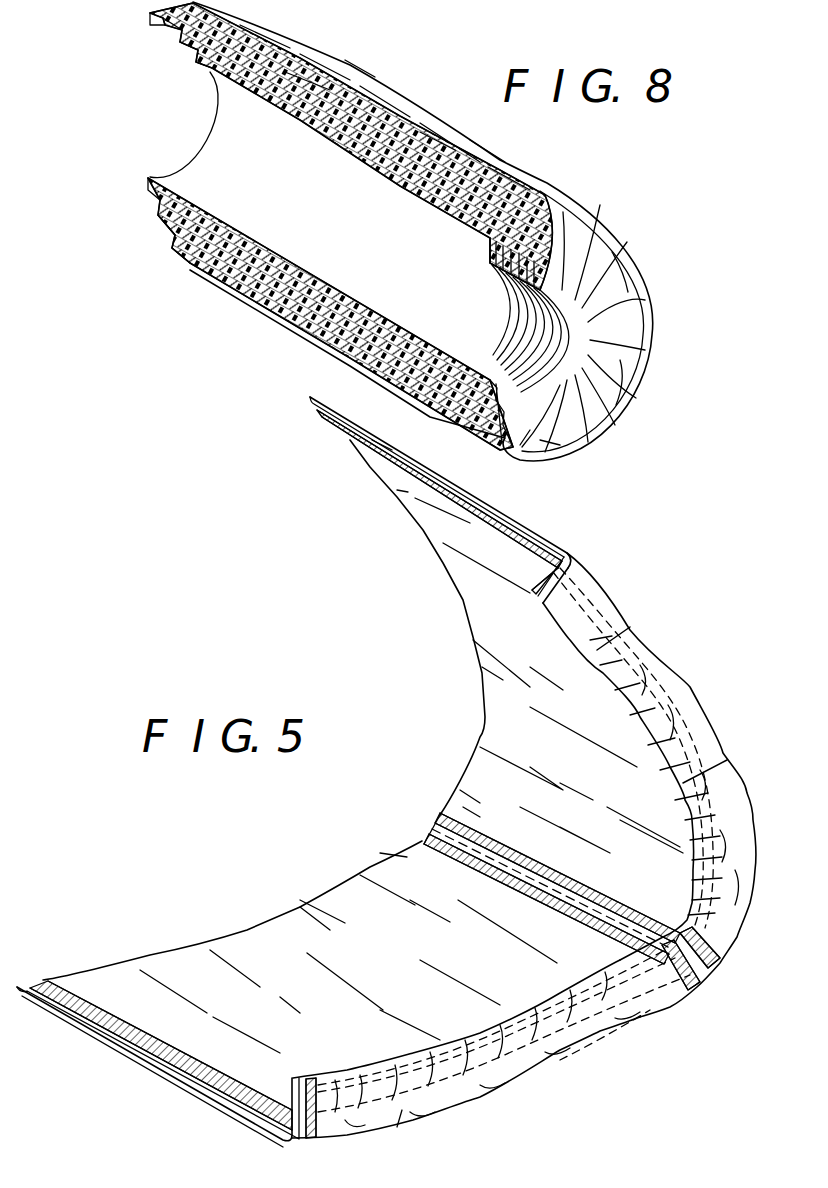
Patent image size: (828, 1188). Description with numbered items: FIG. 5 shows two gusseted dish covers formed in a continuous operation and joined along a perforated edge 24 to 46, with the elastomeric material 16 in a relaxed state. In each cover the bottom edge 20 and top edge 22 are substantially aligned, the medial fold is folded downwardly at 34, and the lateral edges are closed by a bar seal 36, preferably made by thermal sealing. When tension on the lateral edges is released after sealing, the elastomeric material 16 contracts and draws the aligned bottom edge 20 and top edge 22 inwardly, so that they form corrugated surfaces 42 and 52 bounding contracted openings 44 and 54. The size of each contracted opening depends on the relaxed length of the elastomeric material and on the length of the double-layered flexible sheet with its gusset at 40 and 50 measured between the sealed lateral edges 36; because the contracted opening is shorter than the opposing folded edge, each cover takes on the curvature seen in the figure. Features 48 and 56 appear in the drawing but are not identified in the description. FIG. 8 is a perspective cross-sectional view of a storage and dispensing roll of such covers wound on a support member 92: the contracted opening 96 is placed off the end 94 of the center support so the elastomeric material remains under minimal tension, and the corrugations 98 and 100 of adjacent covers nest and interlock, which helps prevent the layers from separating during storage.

In FIG. 5, the elastomeric material 16 is at (633, 700).
In FIG. 5, the bottom edge 20 is at (687, 800).
In FIG. 5, the top edge 22 is at (727, 760).
In FIG. 5, the lateral edge 24 is at (438, 818).
In FIG. 5, the downward fold 34 is at (397, 1127).
In FIG. 5, the bar seal 36 is at (350, 428).
In FIG. 5, the double-layered gusset 40 is at (273, 930).
In FIG. 5, the corrugated surface 42 is at (533, 1077).
In FIG. 5, the contracted opening 44 is at (602, 1030).
In FIG. 5, the perforated edge 46 is at (700, 973).
In FIG. 5, the edge hem 48 is at (157, 1070).
In FIG. 5, the double-layered gusset 50 is at (493, 730).
In FIG. 5, the corrugated surface 52 is at (690, 687).
In FIG. 5, the contracted opening 54 is at (630, 627).
In FIG. 5, the band end 56 is at (557, 543).
In FIG. 8, the support member 92 is at (205, 185).
In FIG. 8, the end of center support means 94 is at (488, 235).
In FIG. 8, the contracted opening 96 is at (527, 327).
In FIG. 8, the corrugation 98 is at (573, 337).
In FIG. 8, the corrugation 100 is at (565, 342).